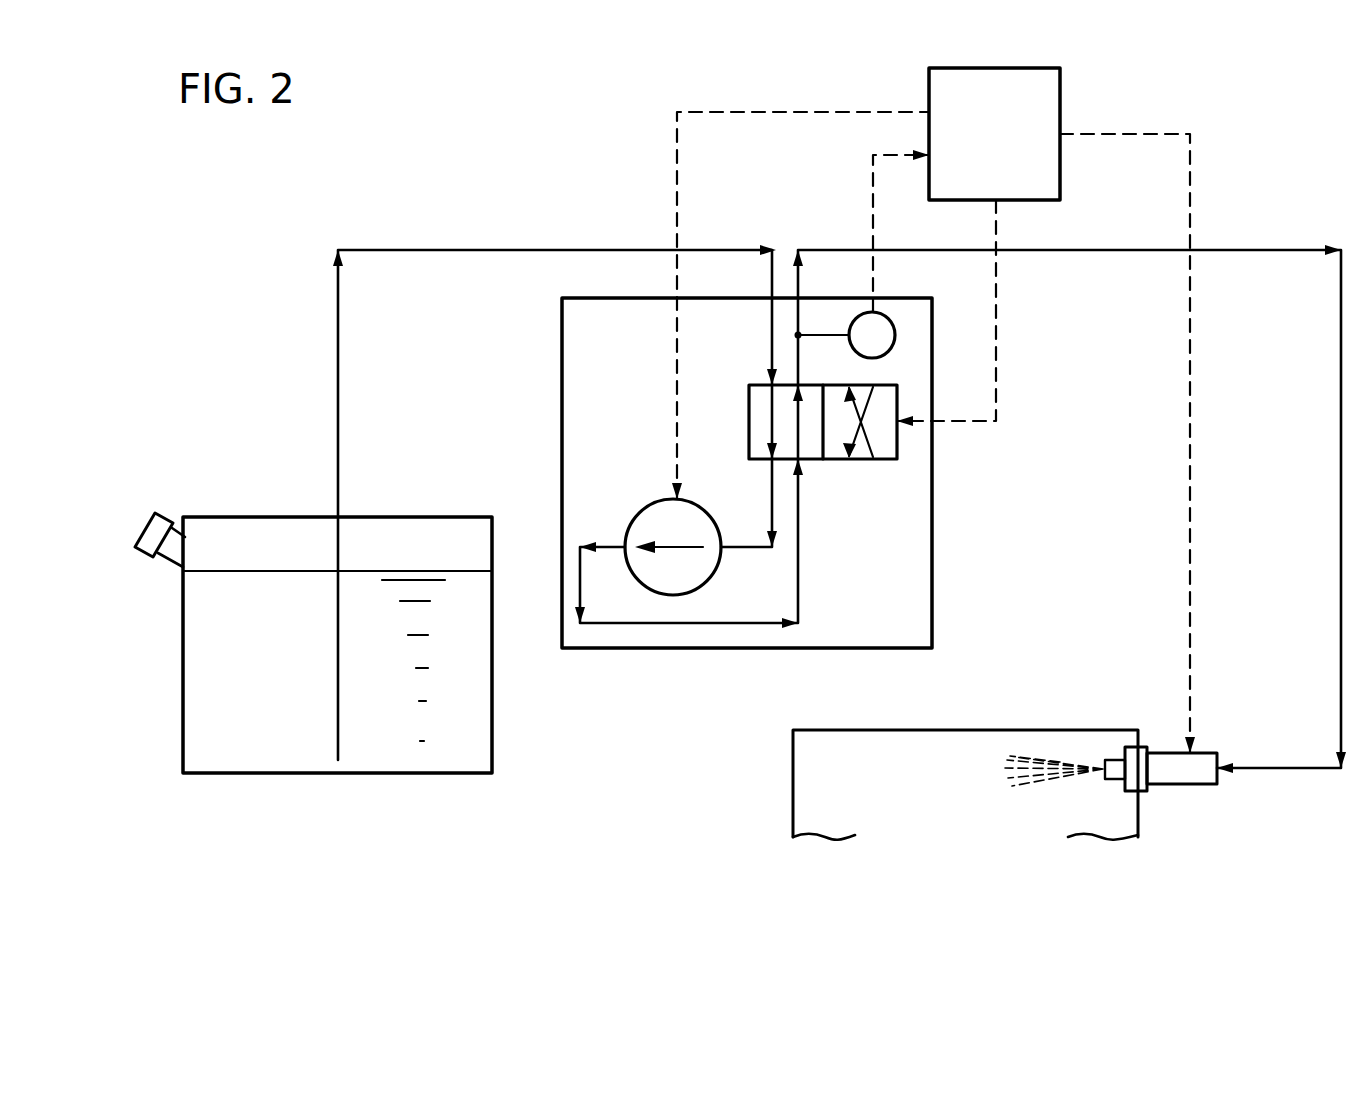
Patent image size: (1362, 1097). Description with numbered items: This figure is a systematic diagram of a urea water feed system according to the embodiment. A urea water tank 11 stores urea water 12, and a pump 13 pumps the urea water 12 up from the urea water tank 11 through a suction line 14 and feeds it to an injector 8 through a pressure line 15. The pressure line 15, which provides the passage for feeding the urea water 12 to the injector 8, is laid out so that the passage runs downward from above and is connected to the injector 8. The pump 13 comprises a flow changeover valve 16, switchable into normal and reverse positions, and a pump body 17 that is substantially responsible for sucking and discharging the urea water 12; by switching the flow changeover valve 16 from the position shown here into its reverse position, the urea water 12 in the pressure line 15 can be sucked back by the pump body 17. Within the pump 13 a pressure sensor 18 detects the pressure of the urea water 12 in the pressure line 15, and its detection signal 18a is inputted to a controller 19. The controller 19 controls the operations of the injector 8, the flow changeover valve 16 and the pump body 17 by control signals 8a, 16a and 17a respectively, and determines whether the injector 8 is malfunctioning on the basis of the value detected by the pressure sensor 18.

The injector 8 is at (1207, 786).
The control signal 8a is at (1192, 624).
The urea water tank 11 is at (257, 517).
The urea water 12 is at (423, 571).
The pump 13 is at (945, 553).
The suction line 14 is at (415, 250).
The pressure line 15 is at (1281, 250).
The flow changeover valve 16 is at (858, 462).
The control signal 16a is at (996, 386).
The pump body 17 is at (646, 506).
The control signal 17a is at (677, 142).
The pressure sensor 18 is at (895, 328).
The detection signal 18a is at (873, 190).
The controller 19 is at (1060, 80).